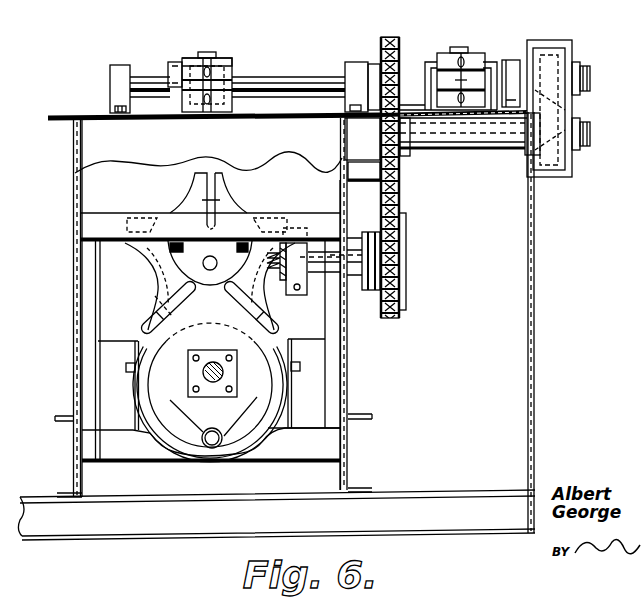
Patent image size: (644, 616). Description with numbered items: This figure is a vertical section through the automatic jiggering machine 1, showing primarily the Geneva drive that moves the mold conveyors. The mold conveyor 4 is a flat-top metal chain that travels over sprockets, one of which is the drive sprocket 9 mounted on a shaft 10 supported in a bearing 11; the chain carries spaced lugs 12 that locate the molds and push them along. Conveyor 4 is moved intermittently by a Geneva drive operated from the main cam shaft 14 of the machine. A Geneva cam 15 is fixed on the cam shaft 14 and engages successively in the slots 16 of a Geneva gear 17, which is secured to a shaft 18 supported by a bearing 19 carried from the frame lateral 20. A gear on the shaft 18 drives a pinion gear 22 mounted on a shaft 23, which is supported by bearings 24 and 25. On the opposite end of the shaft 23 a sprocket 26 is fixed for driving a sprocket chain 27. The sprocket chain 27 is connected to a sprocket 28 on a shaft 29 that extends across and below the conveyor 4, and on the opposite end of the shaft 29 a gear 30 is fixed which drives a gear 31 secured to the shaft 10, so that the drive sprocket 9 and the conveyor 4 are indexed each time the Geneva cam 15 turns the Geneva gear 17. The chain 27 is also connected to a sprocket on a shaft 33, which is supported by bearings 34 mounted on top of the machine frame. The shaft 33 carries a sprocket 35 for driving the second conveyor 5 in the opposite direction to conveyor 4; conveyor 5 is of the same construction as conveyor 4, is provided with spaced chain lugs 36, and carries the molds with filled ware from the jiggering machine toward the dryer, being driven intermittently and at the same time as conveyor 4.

The automatic jiggering machine 1 is at (536, 321).
The conveyor 4 is at (426, 52).
The conveyor 5 is at (178, 62).
The sprocket 9 is at (470, 57).
The shaft 10 is at (556, 45).
The bearing 11 is at (510, 58).
The lugs 12 is at (459, 47).
The main cam shaft 14 is at (213, 384).
The Geneva cam 15 is at (192, 408).
The slots 16 is at (150, 323).
The Geneva gear 17 is at (165, 270).
The shaft 18 is at (210, 270).
The bearing 19 is at (190, 218).
The frame lateral 20 is at (132, 217).
The pinion gear 22 is at (270, 290).
The shaft 23 is at (322, 228).
The bearing 24 is at (288, 296).
The bearing 25 is at (372, 290).
The sprocket 26 is at (407, 256).
The sprocket chain 27 is at (403, 196).
The sprocket 28 is at (345, 135).
The shaft 29 is at (495, 148).
The gear 30 is at (574, 168).
The gear 31 is at (580, 97).
The shaft 33 is at (294, 76).
The bearings 34 is at (110, 72).
The sprocket 35 is at (184, 58).
The chain lugs 36 is at (208, 52).